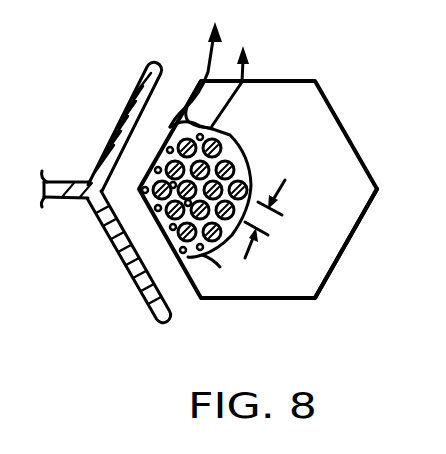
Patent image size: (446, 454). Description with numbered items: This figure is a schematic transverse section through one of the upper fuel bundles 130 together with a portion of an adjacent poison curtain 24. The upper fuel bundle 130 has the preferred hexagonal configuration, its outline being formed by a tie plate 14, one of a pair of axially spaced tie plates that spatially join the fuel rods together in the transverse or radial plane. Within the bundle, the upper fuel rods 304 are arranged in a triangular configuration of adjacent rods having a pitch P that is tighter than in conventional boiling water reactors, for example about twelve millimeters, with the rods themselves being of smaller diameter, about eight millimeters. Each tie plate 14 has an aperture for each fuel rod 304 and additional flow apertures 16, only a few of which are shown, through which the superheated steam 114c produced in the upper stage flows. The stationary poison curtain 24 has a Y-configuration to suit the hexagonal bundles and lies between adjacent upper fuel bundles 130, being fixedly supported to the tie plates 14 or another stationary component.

The superheated steam 114c is at (210, 53).
The upper fuel bundle 130 is at (342, 108).
The upper fuel rod 304 is at (222, 136).
The pitch P is at (283, 178).
The poison curtain 24 is at (66, 200).
The flow aperture 16 is at (210, 209).
The tie plate 14 is at (330, 237).